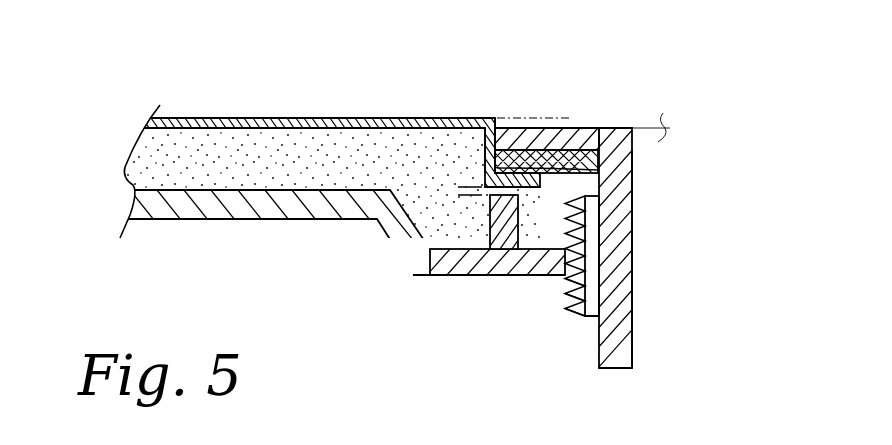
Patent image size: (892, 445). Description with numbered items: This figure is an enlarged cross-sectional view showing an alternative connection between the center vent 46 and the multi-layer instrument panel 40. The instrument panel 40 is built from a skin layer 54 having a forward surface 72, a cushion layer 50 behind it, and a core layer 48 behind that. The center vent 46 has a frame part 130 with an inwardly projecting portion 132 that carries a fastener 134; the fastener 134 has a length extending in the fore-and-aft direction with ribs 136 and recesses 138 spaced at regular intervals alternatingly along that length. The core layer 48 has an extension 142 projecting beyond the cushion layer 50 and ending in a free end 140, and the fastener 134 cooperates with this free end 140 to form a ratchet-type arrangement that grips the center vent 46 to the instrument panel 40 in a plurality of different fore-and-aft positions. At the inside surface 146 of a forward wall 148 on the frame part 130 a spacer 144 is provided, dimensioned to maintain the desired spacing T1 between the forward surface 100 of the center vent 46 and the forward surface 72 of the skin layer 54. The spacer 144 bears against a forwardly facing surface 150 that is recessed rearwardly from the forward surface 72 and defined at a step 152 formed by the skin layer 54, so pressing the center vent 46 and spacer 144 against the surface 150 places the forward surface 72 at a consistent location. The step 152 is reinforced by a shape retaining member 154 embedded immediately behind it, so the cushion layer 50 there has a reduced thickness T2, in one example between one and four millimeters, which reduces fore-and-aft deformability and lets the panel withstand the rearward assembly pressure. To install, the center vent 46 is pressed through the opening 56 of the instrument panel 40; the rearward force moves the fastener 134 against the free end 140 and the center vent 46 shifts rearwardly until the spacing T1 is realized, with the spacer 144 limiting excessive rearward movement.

The instrument panel 40 is at (130, 183).
The center vent 46 is at (620, 128).
The core layer 48 is at (263, 222).
The cushion layer 50 is at (165, 160).
The skin layer 54 is at (343, 118).
The opening 56 is at (547, 277).
The forward surface 72 is at (268, 118).
The forward surface 100 is at (582, 128).
The frame part 130 is at (632, 158).
The inwardly projecting portion 132 is at (632, 224).
The fastener 134 is at (588, 318).
The ribs 136 is at (565, 286).
The recesses 138 is at (565, 298).
The free end 140 is at (583, 256).
The extension 142 is at (545, 278).
The spacer 144 is at (542, 132).
The inside surface 146 is at (485, 148).
The forward wall 148 is at (518, 133).
The forwardly facing surface 150 is at (495, 160).
The step 152 is at (598, 170).
The shape retaining member 154 is at (440, 277).
The spacing T1 is at (508, 128).
The reduced thickness T2 is at (472, 160).